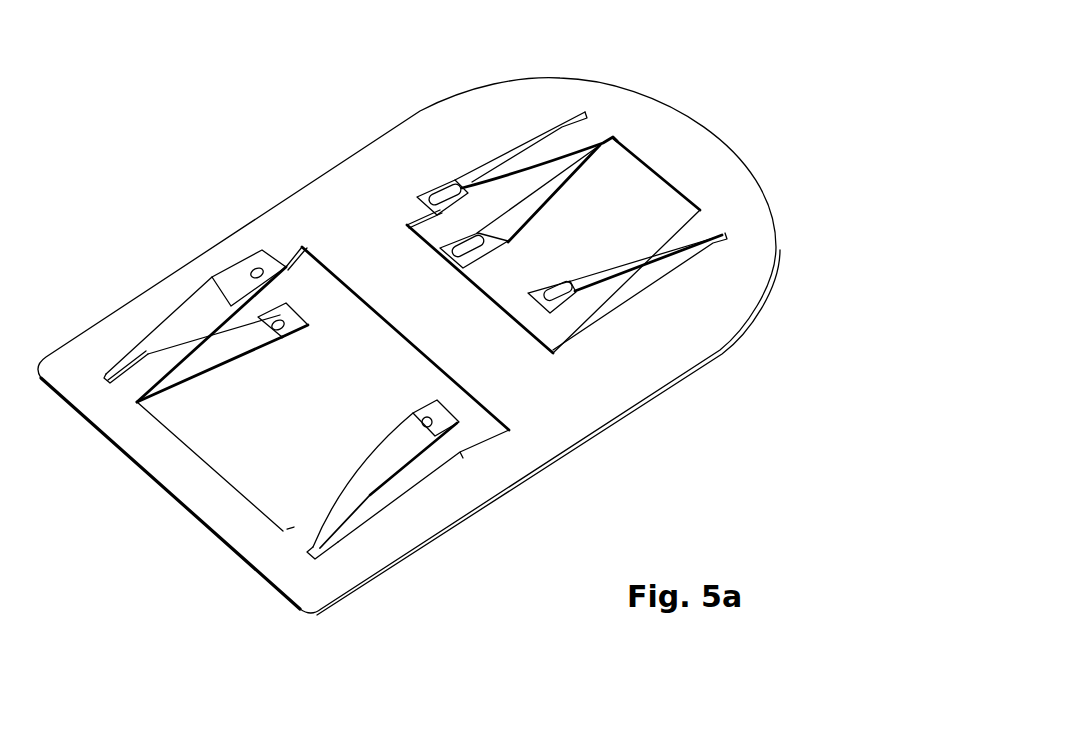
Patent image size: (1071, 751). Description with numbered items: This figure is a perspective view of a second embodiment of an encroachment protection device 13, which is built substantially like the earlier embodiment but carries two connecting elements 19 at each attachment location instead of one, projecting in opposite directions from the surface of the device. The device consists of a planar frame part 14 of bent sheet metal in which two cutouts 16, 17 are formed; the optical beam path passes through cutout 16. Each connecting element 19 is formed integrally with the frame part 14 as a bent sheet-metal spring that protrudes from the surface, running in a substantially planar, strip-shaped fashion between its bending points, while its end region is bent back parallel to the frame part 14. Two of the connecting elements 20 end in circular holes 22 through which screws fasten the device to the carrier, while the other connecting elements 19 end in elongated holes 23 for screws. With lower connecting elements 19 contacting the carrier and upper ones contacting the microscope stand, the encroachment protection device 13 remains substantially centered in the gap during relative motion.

The encroachment protection device 13 is at (408, 340).
The frame part 14 is at (261, 249).
The cutout 16 is at (333, 340).
The cutout 17 is at (598, 187).
The connecting element 19 is at (528, 197).
The connecting element 20 is at (233, 348).
The circular hole 22 is at (277, 327).
The elongated hole 23 is at (442, 193).